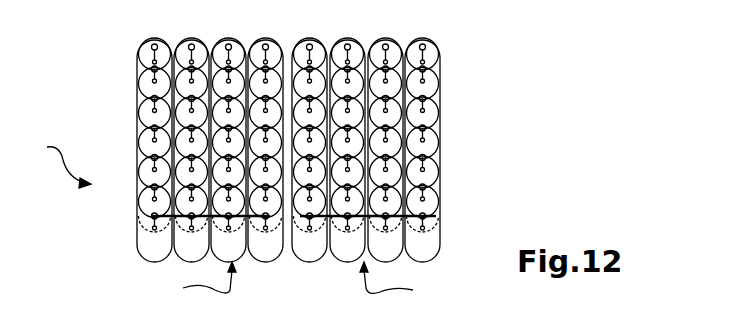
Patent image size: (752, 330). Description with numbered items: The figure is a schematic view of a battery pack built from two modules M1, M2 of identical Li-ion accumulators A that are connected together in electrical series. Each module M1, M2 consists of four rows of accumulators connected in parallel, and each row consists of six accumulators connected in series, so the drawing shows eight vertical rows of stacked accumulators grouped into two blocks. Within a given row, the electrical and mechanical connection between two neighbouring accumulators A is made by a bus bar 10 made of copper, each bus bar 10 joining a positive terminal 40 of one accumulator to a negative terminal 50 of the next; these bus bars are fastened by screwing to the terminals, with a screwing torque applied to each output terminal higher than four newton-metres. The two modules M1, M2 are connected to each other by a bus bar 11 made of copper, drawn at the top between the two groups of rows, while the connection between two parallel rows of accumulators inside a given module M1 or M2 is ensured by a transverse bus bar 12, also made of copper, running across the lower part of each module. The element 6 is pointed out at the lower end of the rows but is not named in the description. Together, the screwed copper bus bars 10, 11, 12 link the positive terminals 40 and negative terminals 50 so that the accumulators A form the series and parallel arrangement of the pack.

The battery module bottom 6 is at (137, 250).
The bus bar 10 is at (133, 160).
The bus bar 11 is at (288, 43).
The bus bar 12 is at (152, 218).
The positive output terminal 40 is at (443, 113).
The negative terminal 50 is at (440, 88).
The Li-ion accumulator A is at (59, 161).
The module M1 is at (190, 283).
The module M2 is at (409, 286).